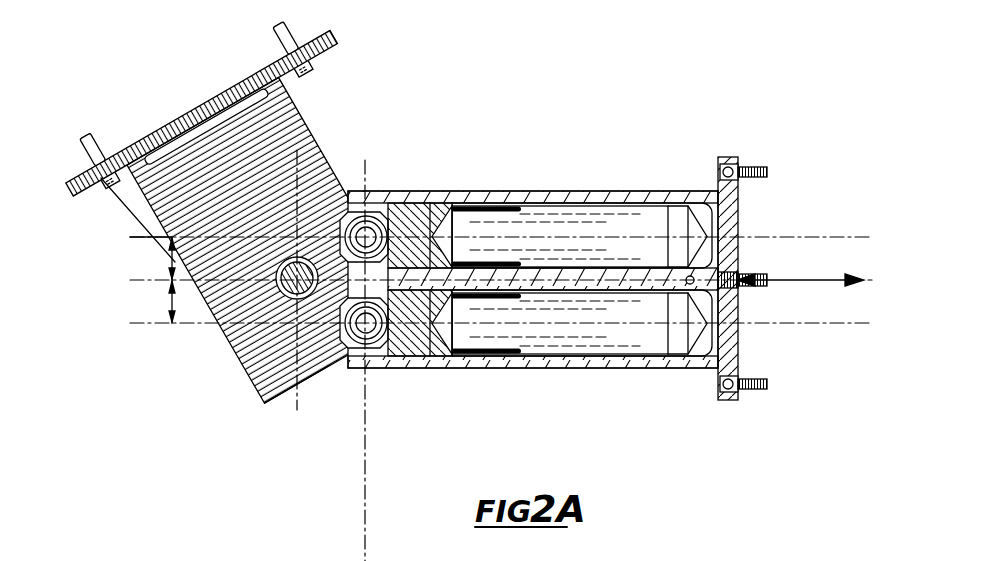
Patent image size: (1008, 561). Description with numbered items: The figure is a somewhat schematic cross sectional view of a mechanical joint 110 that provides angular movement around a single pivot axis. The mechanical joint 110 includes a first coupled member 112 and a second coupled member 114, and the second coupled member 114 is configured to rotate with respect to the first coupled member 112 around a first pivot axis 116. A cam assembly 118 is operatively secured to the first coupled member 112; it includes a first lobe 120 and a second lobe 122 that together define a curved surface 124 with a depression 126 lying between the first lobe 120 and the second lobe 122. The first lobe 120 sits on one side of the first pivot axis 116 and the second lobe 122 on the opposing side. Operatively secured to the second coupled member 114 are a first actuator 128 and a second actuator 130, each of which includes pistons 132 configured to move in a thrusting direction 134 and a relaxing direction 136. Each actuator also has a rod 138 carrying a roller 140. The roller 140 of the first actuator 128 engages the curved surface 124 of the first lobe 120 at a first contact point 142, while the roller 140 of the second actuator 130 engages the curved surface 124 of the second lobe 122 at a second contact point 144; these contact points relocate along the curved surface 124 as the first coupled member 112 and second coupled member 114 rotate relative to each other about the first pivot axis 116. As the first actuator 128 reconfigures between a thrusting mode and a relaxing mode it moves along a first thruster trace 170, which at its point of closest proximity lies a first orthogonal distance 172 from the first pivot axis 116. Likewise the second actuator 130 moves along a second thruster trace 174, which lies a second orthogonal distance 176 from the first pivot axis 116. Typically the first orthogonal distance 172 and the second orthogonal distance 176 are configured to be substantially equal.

The mechanical joint 110 is at (562, 92).
The first coupled member 112 is at (322, 84).
The second coupled member 114 is at (692, 190).
The first pivot axis 116 is at (293, 272).
The cam assembly 118 is at (228, 350).
The first lobe 120 is at (268, 405).
The second lobe 122 is at (362, 176).
The curved surface 124 is at (340, 215).
The depression 126 is at (392, 255).
The first actuator 128 is at (484, 376).
The second actuator 130 is at (566, 186).
The pistons 132 is at (518, 228).
The thrusting direction 134 is at (752, 292).
The relaxing direction 136 is at (810, 284).
The rod 138 is at (420, 300).
The roller 140 is at (382, 290).
The first contact point 142 is at (336, 324).
The second contact point 144 is at (330, 237).
The first thruster trace 170 is at (143, 325).
The first orthogonal distance 172 is at (168, 301).
The second thruster trace 174 is at (138, 236).
The second orthogonal distance 176 is at (168, 258).